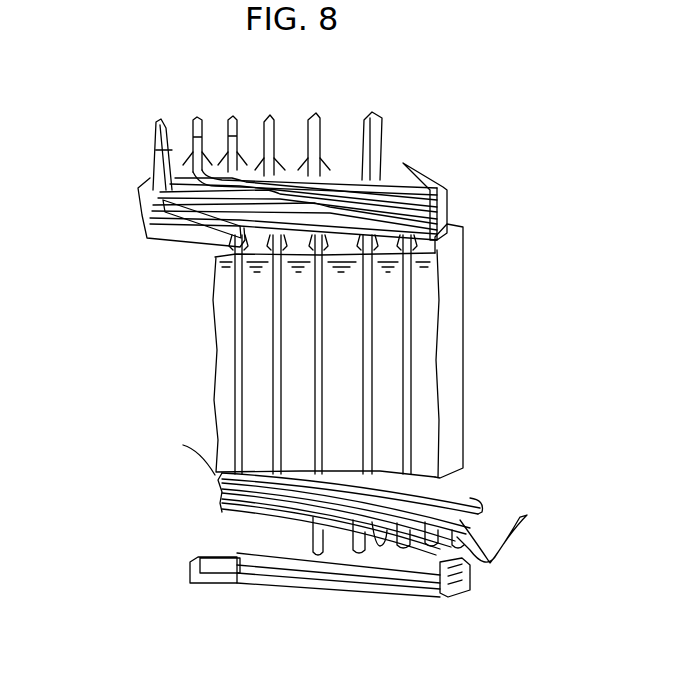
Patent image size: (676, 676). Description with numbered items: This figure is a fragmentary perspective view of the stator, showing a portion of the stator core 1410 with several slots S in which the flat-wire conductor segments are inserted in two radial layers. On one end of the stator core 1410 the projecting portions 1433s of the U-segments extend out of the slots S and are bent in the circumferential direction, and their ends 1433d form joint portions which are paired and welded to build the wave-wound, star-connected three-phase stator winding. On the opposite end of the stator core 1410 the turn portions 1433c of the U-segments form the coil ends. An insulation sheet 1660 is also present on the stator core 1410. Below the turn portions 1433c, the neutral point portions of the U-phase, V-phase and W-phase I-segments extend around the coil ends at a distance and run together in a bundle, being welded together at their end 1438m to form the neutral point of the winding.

The end of projecting portion 1433d is at (237, 118).
The projecting portion 1433s is at (403, 163).
The insulation sheet 1660 is at (437, 188).
The slot S is at (410, 303).
The stator core 1410 is at (428, 352).
The turn portion 1433c is at (300, 490).
The end of neutral point portion 1438m is at (458, 597).